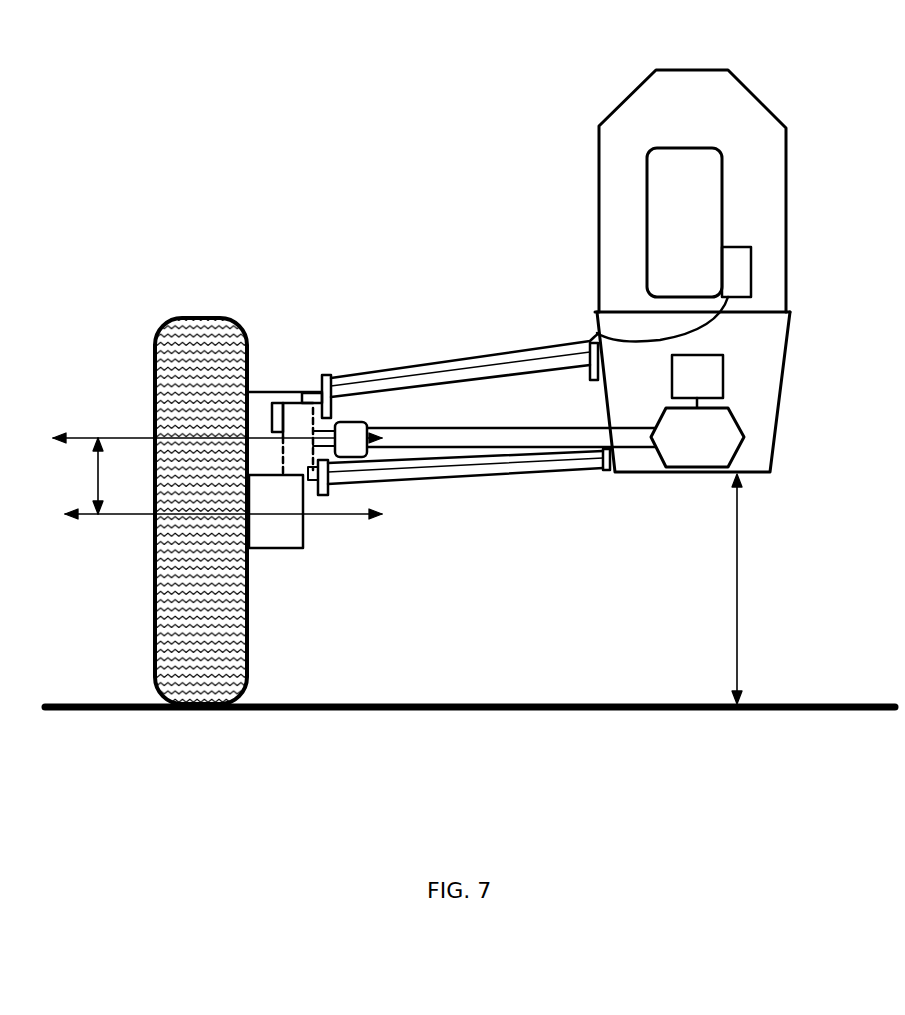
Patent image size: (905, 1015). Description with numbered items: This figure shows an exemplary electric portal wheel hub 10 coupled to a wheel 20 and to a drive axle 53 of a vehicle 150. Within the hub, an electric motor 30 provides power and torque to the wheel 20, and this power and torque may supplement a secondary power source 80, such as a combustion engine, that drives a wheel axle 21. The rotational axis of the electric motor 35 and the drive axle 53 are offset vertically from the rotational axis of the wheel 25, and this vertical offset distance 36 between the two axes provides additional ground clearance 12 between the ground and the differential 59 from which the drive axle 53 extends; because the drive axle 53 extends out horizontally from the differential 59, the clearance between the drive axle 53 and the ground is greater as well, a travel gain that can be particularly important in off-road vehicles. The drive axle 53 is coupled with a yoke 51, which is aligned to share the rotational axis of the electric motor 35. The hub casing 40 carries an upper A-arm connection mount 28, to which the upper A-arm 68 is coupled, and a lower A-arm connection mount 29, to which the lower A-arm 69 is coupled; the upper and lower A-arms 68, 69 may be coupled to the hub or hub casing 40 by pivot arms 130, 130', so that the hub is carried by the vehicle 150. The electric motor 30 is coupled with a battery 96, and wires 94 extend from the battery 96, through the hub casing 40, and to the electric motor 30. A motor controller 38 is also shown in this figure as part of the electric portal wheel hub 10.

The electric portal wheel hub 10 is at (297, 278).
The wheel 20 is at (160, 352).
The motor controller 38 is at (257, 392).
The hub casing 40 is at (276, 403).
The electric motor 30 is at (297, 400).
The upper A-arm connection mount 28 is at (326, 375).
The pivot arm 130 is at (469, 341).
The upper A-arm 68 is at (434, 380).
The rotational axis of the electric motor 35 is at (98, 437).
The vertical offset distance 36 is at (98, 464).
The rotational axis of the wheel 25 is at (98, 517).
The wheel axle 21 is at (287, 518).
The lower A-arm connection mount 29 is at (320, 496).
The pivot arm 130' is at (470, 518).
The lower A-arm 69 is at (463, 468).
The yoke 51 is at (370, 422).
The drive axle 53 is at (580, 440).
The differential 59 is at (690, 450).
The wires 94 is at (703, 333).
The secondary power source 80 is at (708, 385).
The battery 96 is at (675, 190).
The vehicle 150 is at (778, 116).
The ground clearance 12 is at (737, 589).